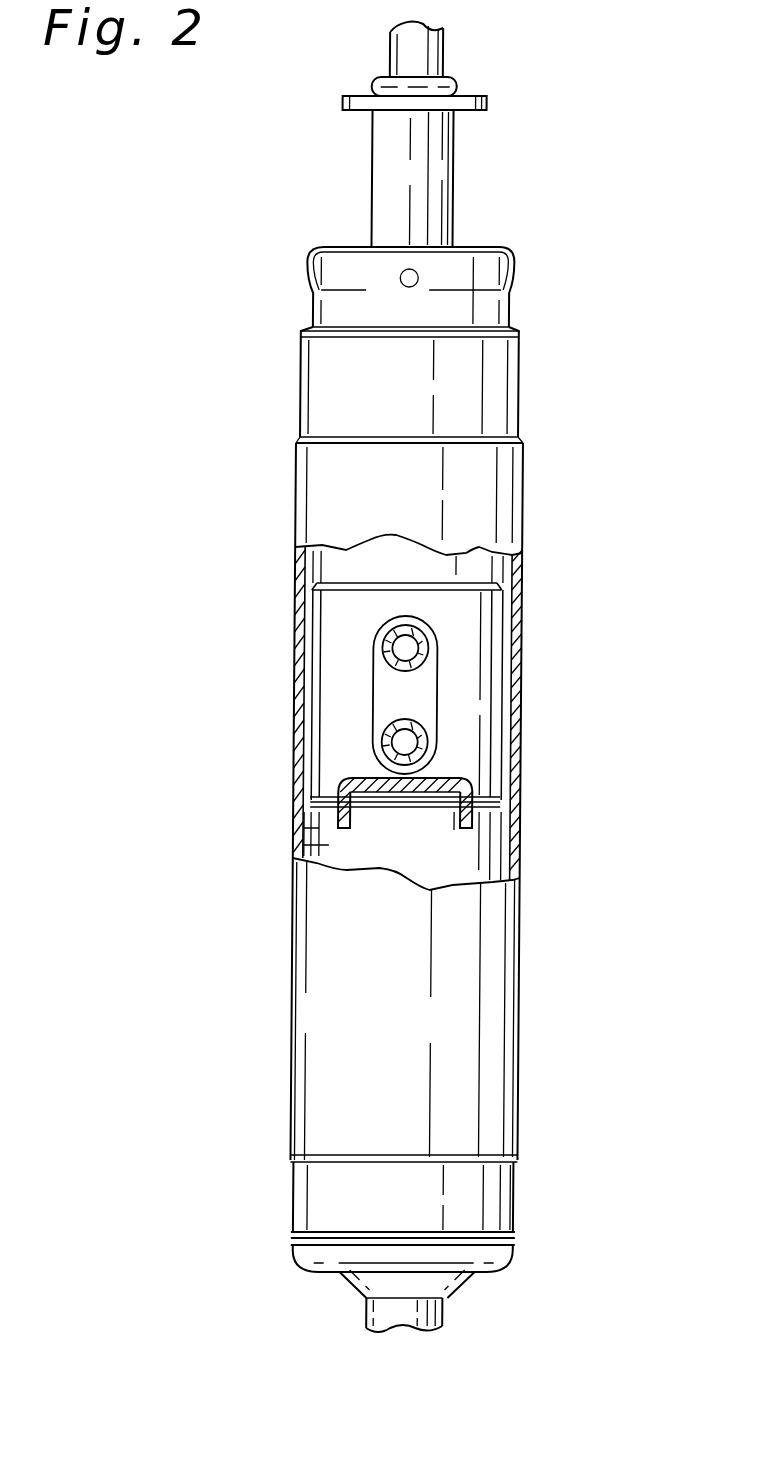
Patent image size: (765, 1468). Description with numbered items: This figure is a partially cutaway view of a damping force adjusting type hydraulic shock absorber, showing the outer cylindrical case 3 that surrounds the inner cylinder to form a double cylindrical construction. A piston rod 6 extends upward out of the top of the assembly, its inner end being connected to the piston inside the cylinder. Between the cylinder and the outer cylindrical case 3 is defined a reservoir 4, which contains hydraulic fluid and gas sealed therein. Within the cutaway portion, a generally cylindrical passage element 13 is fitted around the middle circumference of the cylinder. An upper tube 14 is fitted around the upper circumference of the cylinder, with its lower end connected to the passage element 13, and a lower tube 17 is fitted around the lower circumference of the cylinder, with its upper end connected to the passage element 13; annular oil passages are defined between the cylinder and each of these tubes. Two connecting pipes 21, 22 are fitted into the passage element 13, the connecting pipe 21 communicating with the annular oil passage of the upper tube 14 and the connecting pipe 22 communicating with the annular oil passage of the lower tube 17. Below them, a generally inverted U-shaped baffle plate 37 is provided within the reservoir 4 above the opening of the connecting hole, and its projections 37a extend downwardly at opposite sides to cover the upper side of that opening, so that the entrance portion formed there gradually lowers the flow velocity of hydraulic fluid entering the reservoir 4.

The piston rod 6 is at (387, 160).
The outer cylindrical case 3 is at (320, 387).
The reservoir 4 is at (298, 817).
The upper tube 14 is at (305, 565).
The passage element 13 is at (328, 612).
The connecting pipe 21 is at (428, 648).
The connecting pipe 22 is at (430, 738).
The baffle plate 37 is at (470, 783).
The projections 37a is at (300, 796).
The lower tube 17 is at (300, 845).